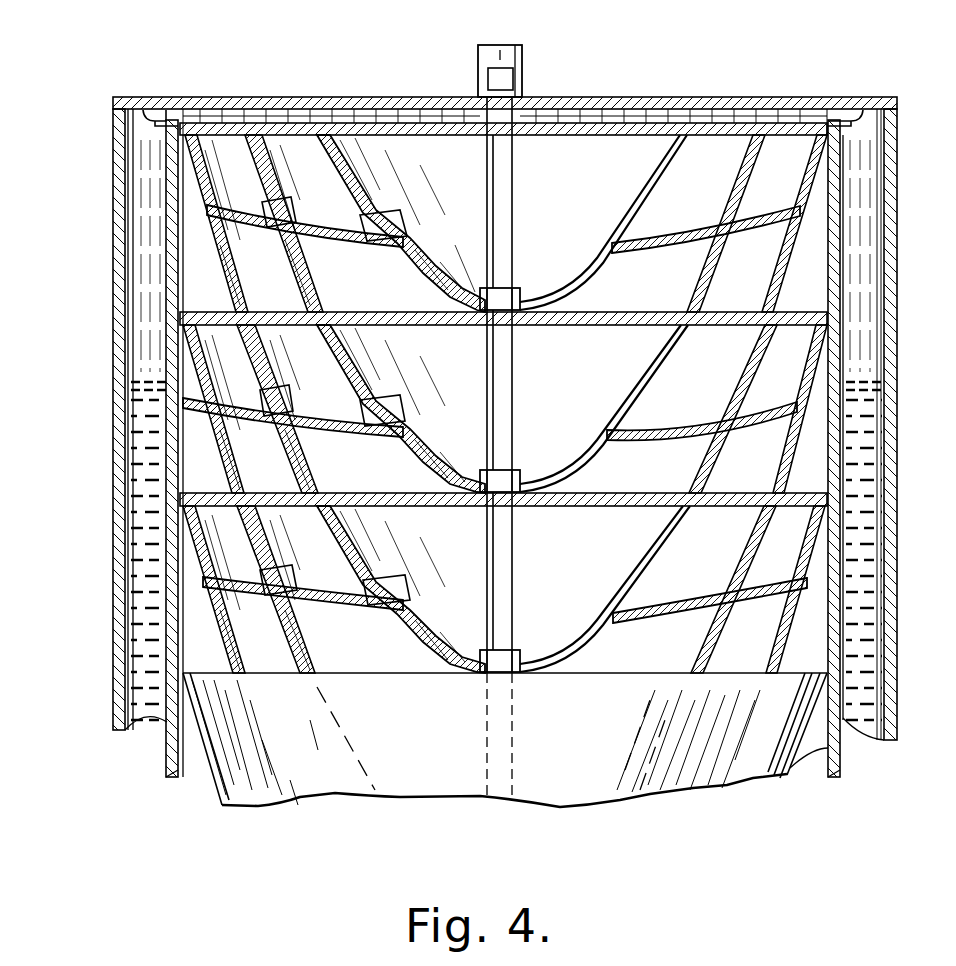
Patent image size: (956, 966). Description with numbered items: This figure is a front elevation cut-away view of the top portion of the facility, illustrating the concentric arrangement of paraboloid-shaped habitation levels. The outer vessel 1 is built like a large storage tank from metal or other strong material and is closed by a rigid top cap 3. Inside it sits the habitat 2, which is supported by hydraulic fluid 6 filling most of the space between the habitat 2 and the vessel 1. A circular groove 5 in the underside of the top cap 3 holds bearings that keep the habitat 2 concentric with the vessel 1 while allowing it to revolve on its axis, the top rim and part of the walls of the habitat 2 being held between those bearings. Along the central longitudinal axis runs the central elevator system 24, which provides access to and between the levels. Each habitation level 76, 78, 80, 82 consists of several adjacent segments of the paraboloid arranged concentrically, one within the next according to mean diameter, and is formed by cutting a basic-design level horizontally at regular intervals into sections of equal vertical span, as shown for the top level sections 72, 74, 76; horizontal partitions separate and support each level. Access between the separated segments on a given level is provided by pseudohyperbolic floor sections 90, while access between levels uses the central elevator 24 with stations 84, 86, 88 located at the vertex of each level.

The vessel 1 is at (118, 155).
The habitat 2 is at (170, 220).
The top cap 3 is at (365, 100).
The circular groove 5 is at (152, 108).
The hydraulic fluid 6 is at (130, 522).
The central elevator system 24 is at (522, 62).
The top level section 72 is at (357, 183).
The top level section 74 is at (253, 170).
The habitation level 76 is at (210, 270).
The habitation level 78 is at (210, 437).
The habitation level 80 is at (210, 577).
The habitation level 82 is at (430, 753).
The station 84 is at (520, 295).
The station 86 is at (522, 478).
The station 88 is at (522, 658).
The pseudohyperbolic floor section 90 is at (333, 243).